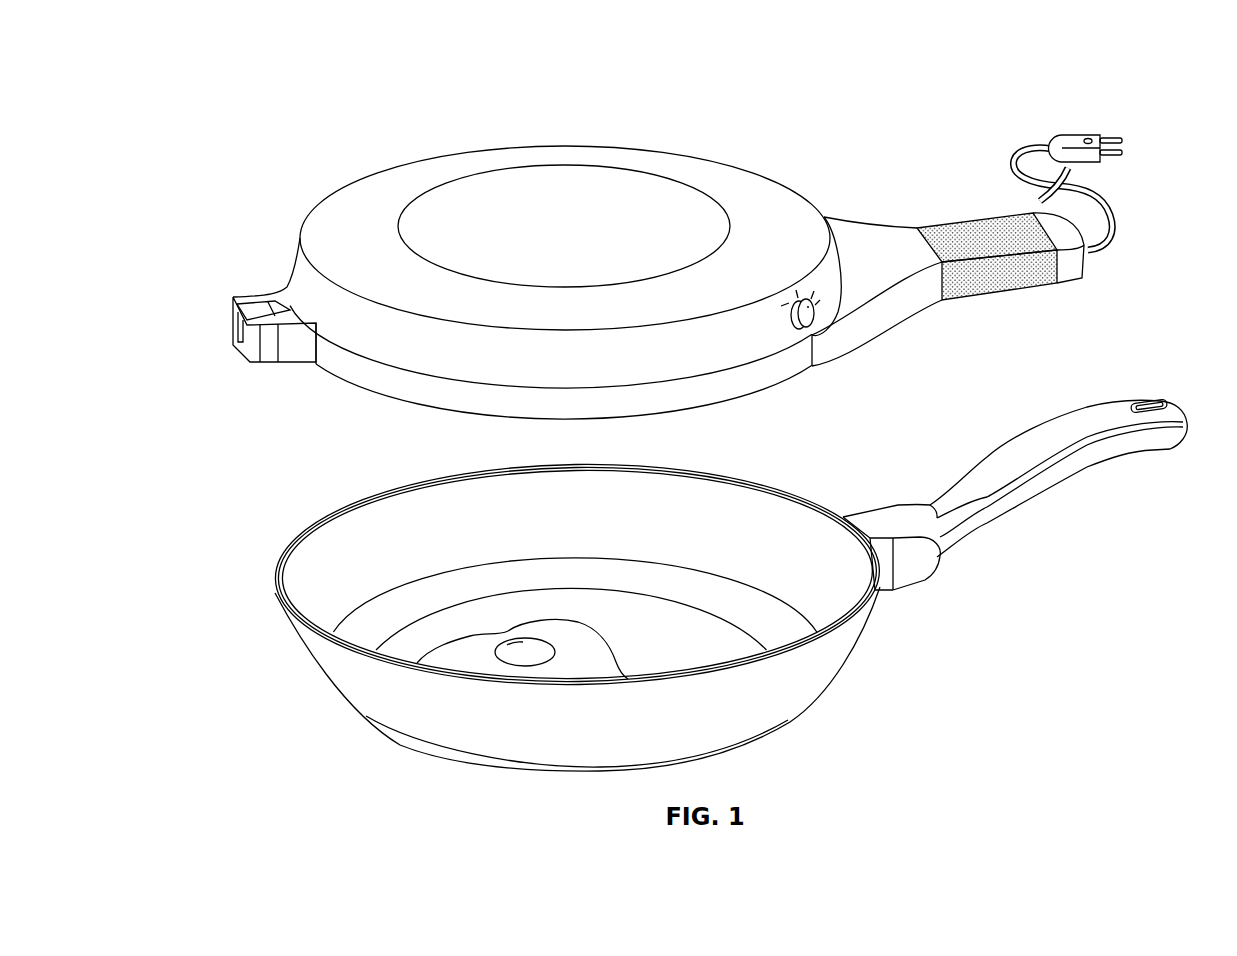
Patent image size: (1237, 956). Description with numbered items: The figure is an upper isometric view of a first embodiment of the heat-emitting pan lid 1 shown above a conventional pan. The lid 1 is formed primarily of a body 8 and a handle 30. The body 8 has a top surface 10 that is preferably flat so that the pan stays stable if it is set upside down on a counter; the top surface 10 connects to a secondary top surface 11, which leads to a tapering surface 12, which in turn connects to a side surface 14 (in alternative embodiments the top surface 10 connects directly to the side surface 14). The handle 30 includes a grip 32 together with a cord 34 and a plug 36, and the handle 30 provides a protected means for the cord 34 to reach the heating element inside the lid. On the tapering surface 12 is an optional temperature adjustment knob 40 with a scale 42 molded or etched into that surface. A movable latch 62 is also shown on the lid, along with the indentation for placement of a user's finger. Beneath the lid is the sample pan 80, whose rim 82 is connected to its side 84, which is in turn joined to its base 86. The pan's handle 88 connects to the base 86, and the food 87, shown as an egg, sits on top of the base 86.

The heat-emitting pan lid 1 is at (861, 129).
The body 8 is at (359, 171).
The top surface 10 is at (480, 200).
The secondary top surface 11 is at (343, 237).
The tapering surface 12 is at (298, 273).
The side surface 14 is at (399, 378).
The handle 30 is at (915, 341).
The grip 32 is at (1008, 277).
The cord 34 is at (1112, 212).
The plug 36 is at (1089, 140).
The temperature adjustment knob 40 is at (813, 323).
The scale 42 is at (791, 318).
The movable latch 62 is at (238, 330).
The sample pan 80 is at (821, 720).
The rim 82 is at (745, 490).
The side 84 is at (760, 567).
The base 86 is at (642, 643).
The food 87 is at (564, 674).
The handle 88 is at (1040, 482).